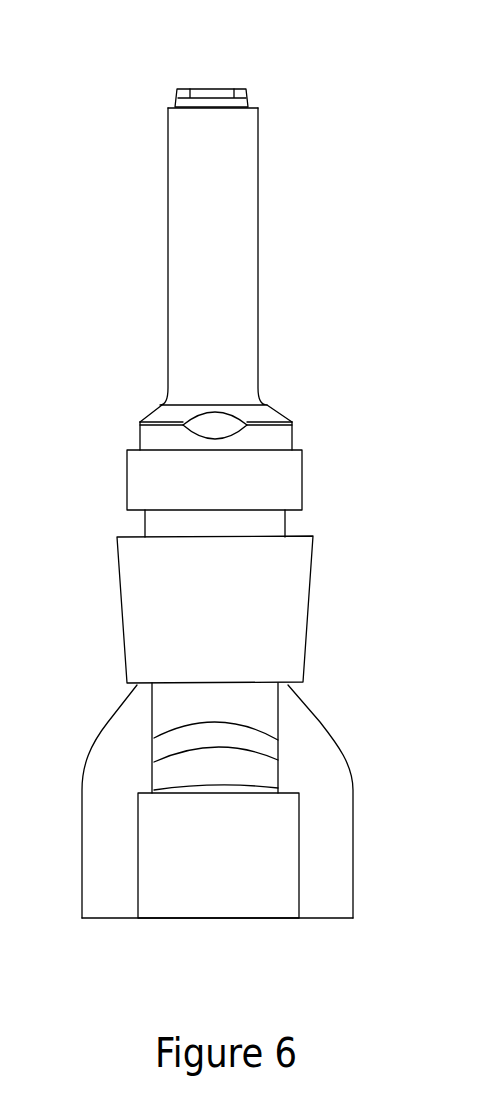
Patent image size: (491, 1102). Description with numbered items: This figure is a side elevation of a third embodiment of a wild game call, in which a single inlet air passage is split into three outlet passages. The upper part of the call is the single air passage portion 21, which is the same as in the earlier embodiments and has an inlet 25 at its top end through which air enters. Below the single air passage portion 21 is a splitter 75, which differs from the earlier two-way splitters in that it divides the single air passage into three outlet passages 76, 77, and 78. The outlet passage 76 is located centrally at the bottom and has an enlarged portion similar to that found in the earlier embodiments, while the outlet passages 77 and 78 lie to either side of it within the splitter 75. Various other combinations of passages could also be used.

The single air passage portion 21 is at (152, 270).
The inlet 25 is at (213, 89).
The splitter 75 is at (106, 701).
The outlet passage 76 is at (197, 903).
The outlet passage 77 is at (340, 819).
The outlet passage 78 is at (107, 864).